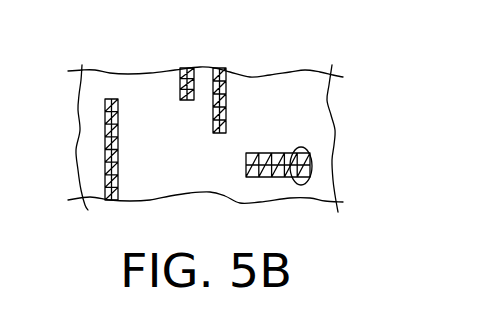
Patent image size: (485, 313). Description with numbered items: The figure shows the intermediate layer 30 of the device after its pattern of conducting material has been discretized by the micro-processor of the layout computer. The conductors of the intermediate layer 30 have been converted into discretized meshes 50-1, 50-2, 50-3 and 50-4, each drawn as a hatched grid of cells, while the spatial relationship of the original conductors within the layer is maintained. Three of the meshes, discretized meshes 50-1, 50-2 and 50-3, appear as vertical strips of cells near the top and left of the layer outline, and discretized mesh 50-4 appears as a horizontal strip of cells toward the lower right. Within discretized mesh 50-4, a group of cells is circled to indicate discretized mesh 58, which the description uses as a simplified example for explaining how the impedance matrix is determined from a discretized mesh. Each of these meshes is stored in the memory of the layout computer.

The intermediate layer 30 is at (128, 85).
The discretized mesh 50-1 is at (107, 162).
The discretized mesh 50-2 is at (175, 70).
The discretized mesh 50-3 is at (225, 88).
The discretized mesh 50-4 is at (265, 152).
The discretized mesh 58 is at (312, 165).